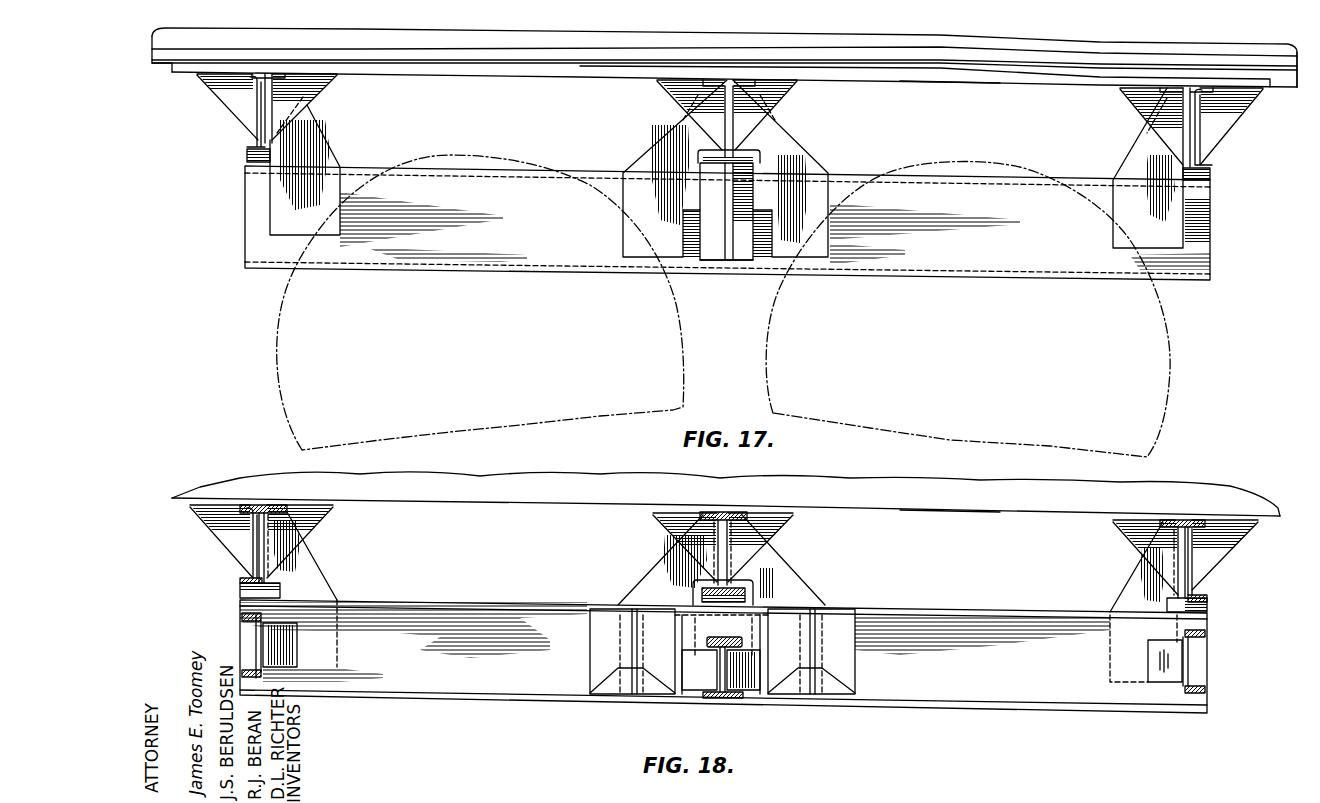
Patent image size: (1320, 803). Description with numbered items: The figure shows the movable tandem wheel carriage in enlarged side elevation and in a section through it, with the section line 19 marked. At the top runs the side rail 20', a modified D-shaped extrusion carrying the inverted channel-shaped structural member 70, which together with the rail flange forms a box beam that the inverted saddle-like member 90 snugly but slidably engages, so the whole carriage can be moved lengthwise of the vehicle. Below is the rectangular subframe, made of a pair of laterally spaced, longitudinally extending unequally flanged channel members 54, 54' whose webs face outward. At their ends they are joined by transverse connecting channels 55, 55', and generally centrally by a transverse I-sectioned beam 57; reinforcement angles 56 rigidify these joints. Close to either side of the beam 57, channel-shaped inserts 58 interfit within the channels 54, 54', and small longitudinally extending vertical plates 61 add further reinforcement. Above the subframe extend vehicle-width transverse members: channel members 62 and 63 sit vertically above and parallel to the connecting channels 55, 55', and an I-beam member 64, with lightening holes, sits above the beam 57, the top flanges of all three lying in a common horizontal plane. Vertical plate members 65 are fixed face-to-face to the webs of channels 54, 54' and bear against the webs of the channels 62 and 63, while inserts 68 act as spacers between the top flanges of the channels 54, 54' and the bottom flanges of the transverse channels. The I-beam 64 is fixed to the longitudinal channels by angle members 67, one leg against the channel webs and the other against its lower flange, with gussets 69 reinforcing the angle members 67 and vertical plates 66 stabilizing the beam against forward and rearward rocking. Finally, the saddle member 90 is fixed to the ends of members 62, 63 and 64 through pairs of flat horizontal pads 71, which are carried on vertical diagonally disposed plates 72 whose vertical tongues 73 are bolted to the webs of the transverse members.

In FIG. 17, the side rail 20' is at (724, 73).
In FIG. 18, the unequally flanged channel member 54 is at (723, 656).
In FIG. 17, the unequally flanged channel member 54' is at (727, 223).
In FIG. 18, the connecting channel 55 is at (1212, 661).
In FIG. 18, the connecting channel 55' is at (234, 645).
In FIG. 18, the reinforcement angle 56 is at (297, 647).
In FIG. 18, the transverse I-sectioned beam 57 is at (725, 698).
In FIG. 18, the channel-shaped insert 58 is at (615, 648).
In FIG. 18, the vertically disposed plate 61 is at (610, 686).
In FIG. 17, the transverse channel member 62 is at (257, 142).
In FIG. 18, the transverse channel member 62 is at (253, 576).
In FIG. 17, the transverse channel member 63 is at (1202, 165).
In FIG. 18, the transverse channel member 63 is at (1195, 593).
In FIG. 17, the transverse I-beam member 64 is at (740, 153).
In FIG. 18, the transverse I-beam member 64 is at (727, 515).
In FIG. 17, the plate member 65 is at (320, 221).
In FIG. 18, the plate member 65 is at (312, 556).
In FIG. 17, the vertical plate 66 is at (655, 216).
In FIG. 18, the vertical plate 66 is at (657, 562).
In FIG. 17, the angle member 67 is at (722, 213).
In FIG. 18, the angle member 67 is at (747, 602).
In FIG. 17, the insert 68 is at (252, 158).
In FIG. 18, the insert 68 is at (280, 590).
In FIG. 17, the gusset 69 is at (727, 261).
In FIG. 17, the channel-shaped structural member 70 is at (1293, 95).
In FIG. 17, the flat horizontal pad 71 is at (335, 86).
In FIG. 17, the diagonally disposed plate 72 is at (310, 98).
In FIG. 17, the tongue 73 is at (258, 110).
In FIG. 17, the saddle-like member 90 is at (931, 90).
In FIG. 18, the saddle-like member 90 is at (957, 524).
In FIG. 17, the section line 19 is at (163, 183).